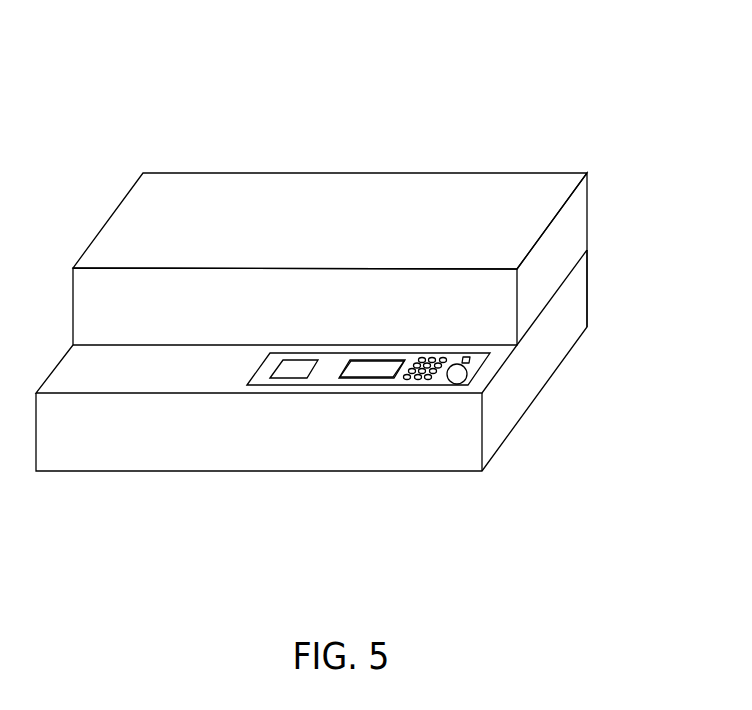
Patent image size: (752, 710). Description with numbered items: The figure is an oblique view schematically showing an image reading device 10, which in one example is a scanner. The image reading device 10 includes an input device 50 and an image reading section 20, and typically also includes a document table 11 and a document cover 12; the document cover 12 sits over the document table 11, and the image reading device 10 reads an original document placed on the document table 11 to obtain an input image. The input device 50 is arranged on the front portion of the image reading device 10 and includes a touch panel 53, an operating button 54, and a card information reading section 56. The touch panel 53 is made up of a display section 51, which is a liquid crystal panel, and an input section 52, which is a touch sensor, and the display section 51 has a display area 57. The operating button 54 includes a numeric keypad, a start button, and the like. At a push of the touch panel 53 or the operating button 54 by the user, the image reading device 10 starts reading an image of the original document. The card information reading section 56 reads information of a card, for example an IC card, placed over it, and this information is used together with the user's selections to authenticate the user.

The image reading device 10 is at (368, 303).
The document table 11 is at (340, 415).
The document cover 12 is at (520, 173).
The image reading section 20 is at (629, 304).
The input device 50 is at (343, 467).
The display section 51 is at (363, 377).
The input section 52 is at (377, 367).
The touch panel 53 is at (365, 470).
The operating button 54 is at (456, 384).
The card information reading section 56 is at (278, 378).
The display area 57 is at (356, 372).